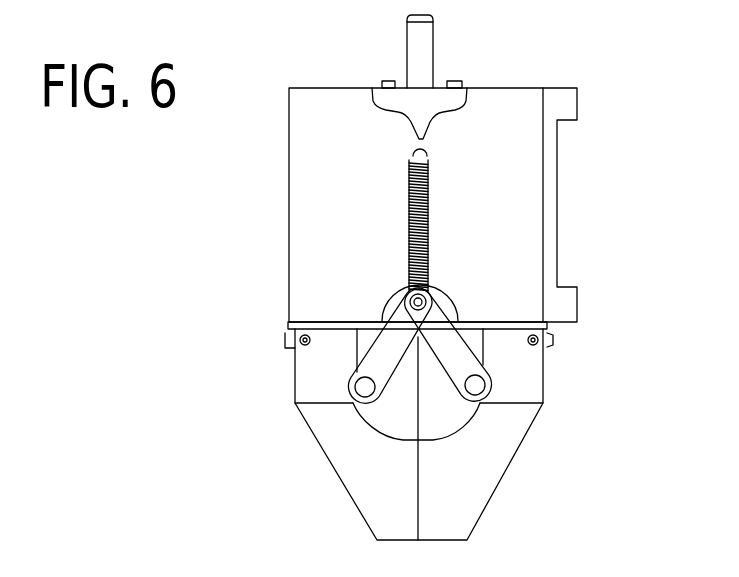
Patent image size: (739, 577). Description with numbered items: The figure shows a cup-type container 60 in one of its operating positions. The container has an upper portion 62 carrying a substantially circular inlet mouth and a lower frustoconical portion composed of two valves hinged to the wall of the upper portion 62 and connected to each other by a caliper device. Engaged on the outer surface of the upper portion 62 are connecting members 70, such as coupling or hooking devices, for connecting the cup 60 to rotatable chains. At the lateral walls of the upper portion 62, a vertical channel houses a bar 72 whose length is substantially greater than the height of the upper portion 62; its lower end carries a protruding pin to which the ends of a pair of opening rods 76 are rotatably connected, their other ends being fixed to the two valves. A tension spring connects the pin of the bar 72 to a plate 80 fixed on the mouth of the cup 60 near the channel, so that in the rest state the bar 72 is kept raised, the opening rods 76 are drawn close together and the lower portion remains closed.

The cup-type container 60 is at (258, 230).
The upper portion 62 is at (521, 103).
The connecting members 70 is at (548, 160).
The bars 72 is at (422, 32).
The opening rods 76 is at (457, 350).
The plate 80 is at (408, 100).